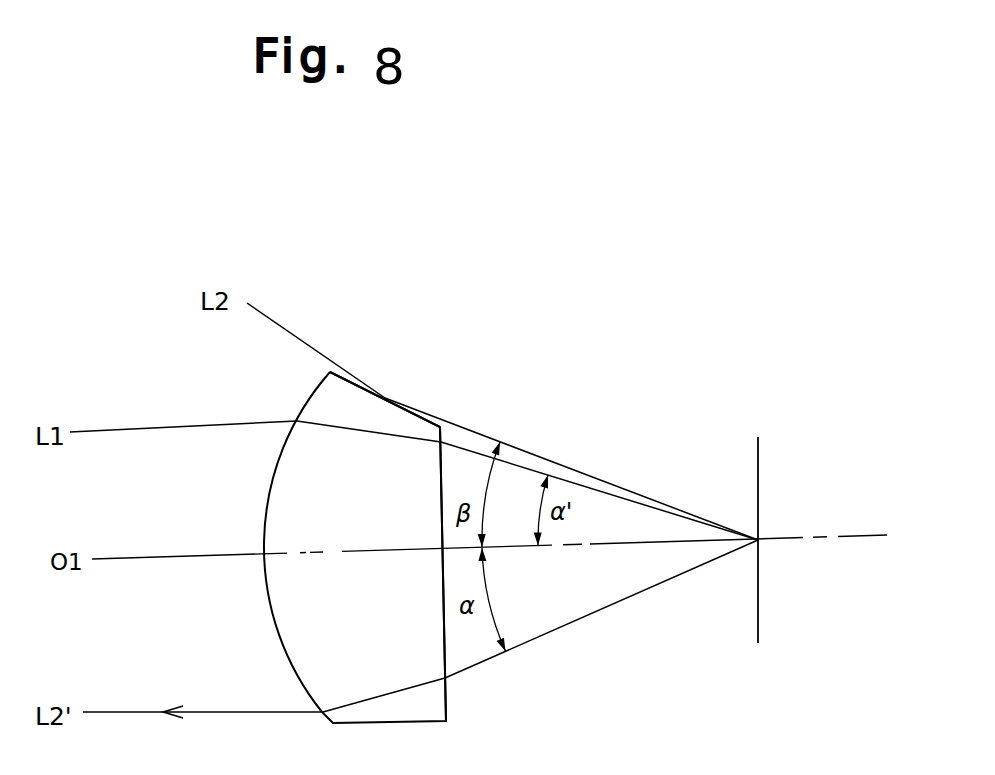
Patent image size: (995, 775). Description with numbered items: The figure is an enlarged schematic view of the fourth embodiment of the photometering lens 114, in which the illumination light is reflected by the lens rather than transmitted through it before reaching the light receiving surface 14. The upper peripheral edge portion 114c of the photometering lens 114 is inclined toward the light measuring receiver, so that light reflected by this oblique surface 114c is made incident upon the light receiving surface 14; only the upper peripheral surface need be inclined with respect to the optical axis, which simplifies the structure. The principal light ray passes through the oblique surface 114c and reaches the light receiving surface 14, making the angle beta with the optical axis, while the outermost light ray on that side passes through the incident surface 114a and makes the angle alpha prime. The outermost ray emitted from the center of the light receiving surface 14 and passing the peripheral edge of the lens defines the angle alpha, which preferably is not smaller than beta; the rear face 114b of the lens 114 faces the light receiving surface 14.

The photometering lens 114 is at (354, 493).
The incident surface 114a is at (270, 622).
The exit surface of lens 114b is at (447, 704).
The upper peripheral edge portion 114c is at (360, 383).
The light receiving surface 14 is at (757, 462).